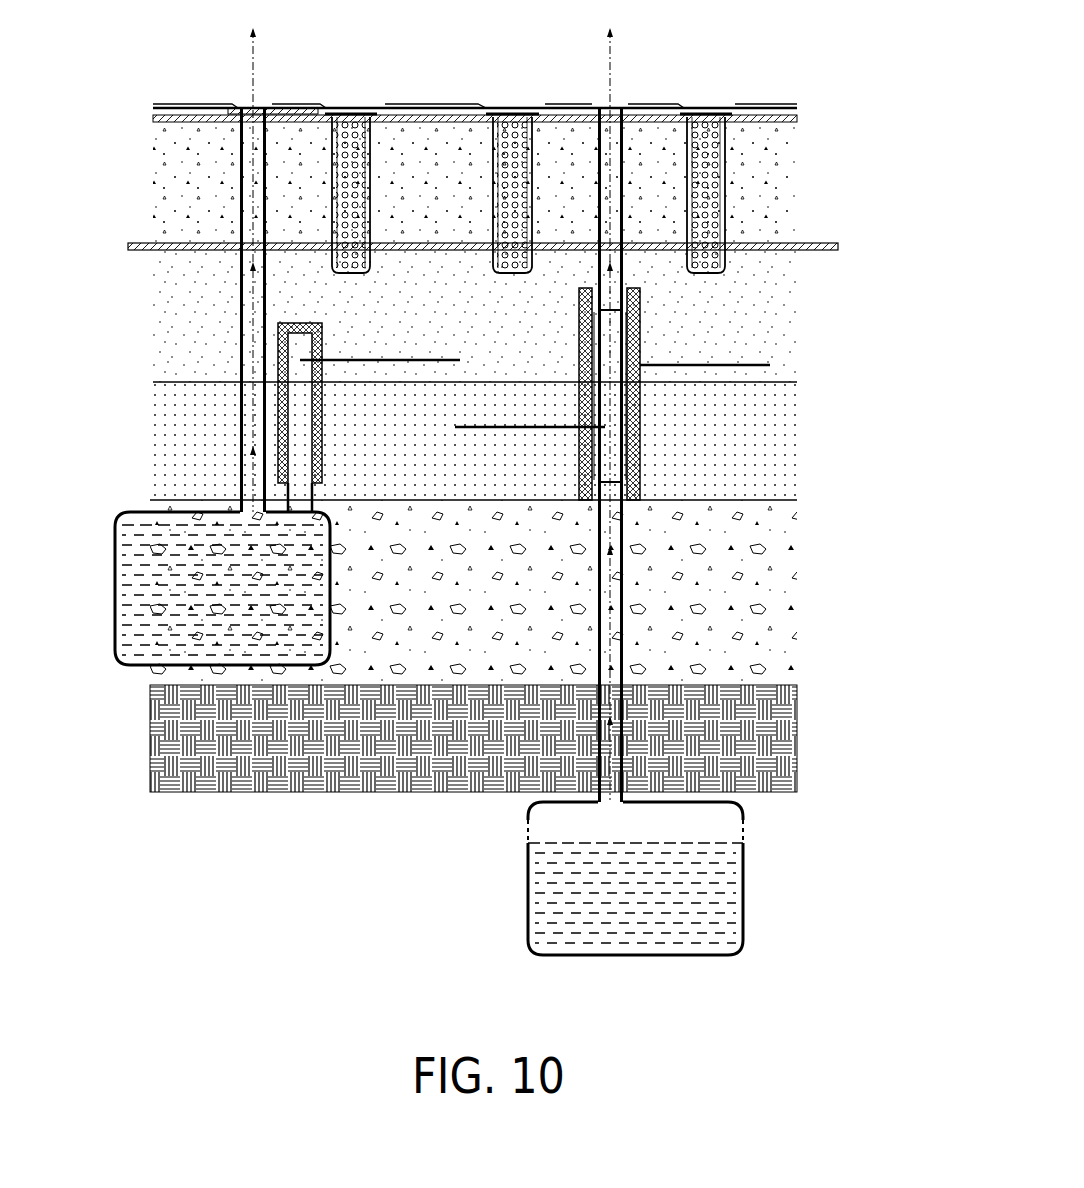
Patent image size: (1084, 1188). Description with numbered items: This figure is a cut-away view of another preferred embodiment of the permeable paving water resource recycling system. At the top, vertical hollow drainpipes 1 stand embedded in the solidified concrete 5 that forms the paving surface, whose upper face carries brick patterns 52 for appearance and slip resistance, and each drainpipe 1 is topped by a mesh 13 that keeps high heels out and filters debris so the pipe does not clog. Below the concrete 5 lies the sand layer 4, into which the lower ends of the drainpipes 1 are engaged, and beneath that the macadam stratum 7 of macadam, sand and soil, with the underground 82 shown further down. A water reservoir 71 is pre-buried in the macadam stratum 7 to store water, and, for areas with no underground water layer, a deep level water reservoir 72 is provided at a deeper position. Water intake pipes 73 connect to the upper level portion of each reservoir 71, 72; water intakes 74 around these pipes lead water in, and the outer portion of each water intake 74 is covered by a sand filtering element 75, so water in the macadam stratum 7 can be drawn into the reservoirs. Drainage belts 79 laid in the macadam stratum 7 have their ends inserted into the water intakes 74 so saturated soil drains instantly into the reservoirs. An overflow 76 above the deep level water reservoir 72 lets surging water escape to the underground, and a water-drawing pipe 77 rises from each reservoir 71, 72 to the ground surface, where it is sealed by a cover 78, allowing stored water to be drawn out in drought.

The drainpipe 1 is at (372, 177).
The mesh 13 is at (513, 110).
The brick pattern 52 is at (303, 112).
The cover 78 is at (242, 105).
The water-drawing pipe 77 is at (623, 157).
The concrete 5 is at (772, 177).
The sand layer 4 is at (772, 275).
The macadam stratum 7 is at (772, 470).
The underground 82 is at (856, 518).
The water intake pipe 73 is at (292, 370).
The water intake 74 is at (290, 420).
The sand filtering element 75 is at (280, 343).
The drainage belt 79 is at (375, 360).
The water reservoir 71 is at (115, 640).
The deep level water reservoir 72 is at (743, 905).
The overflow 76 is at (528, 830).